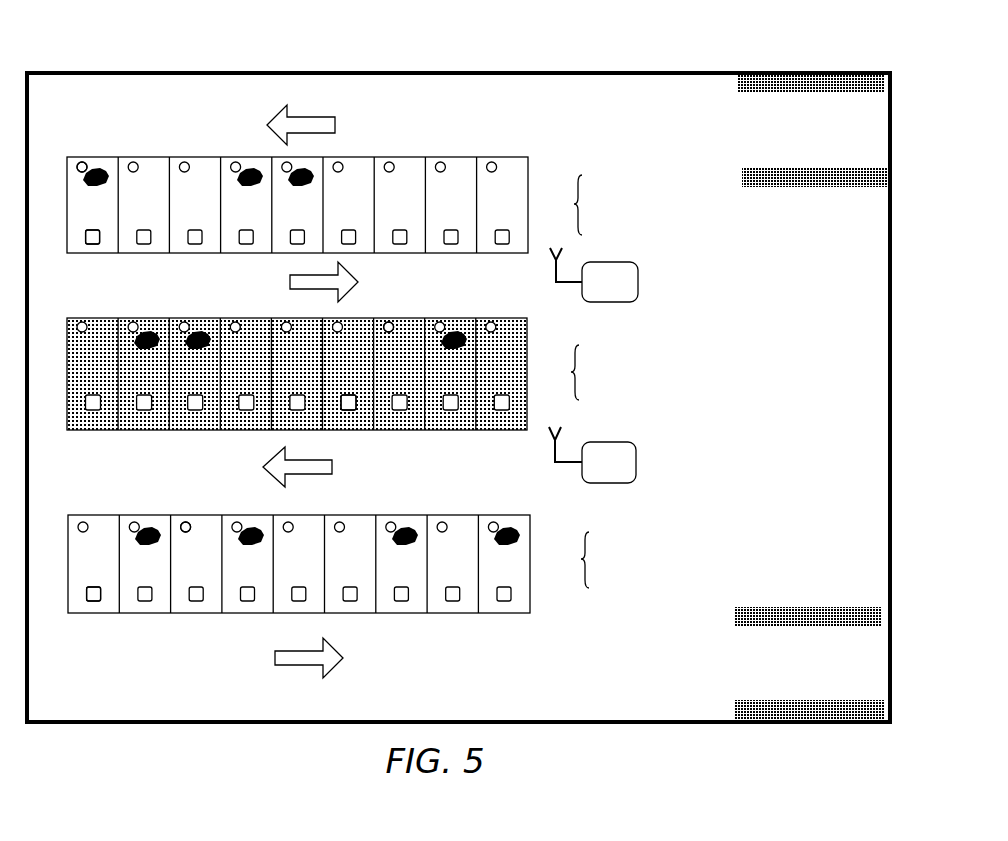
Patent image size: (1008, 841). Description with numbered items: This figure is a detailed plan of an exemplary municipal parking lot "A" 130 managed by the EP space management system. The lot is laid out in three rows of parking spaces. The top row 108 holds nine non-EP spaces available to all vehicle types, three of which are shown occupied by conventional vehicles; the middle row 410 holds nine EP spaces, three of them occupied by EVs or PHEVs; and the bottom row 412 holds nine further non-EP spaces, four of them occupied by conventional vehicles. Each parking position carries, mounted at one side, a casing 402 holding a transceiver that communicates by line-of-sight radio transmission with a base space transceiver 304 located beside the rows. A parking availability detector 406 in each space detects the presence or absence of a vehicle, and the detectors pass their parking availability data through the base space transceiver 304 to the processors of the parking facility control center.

The municipal parking lot "A" 130 is at (520, 62).
The top row 108 is at (544, 146).
The casing 402 is at (83, 160).
The parking availability detector 406 is at (100, 248).
The middle row 410 is at (544, 336).
The bottom row 412 is at (541, 528).
The base space transceiver 304 is at (641, 277).